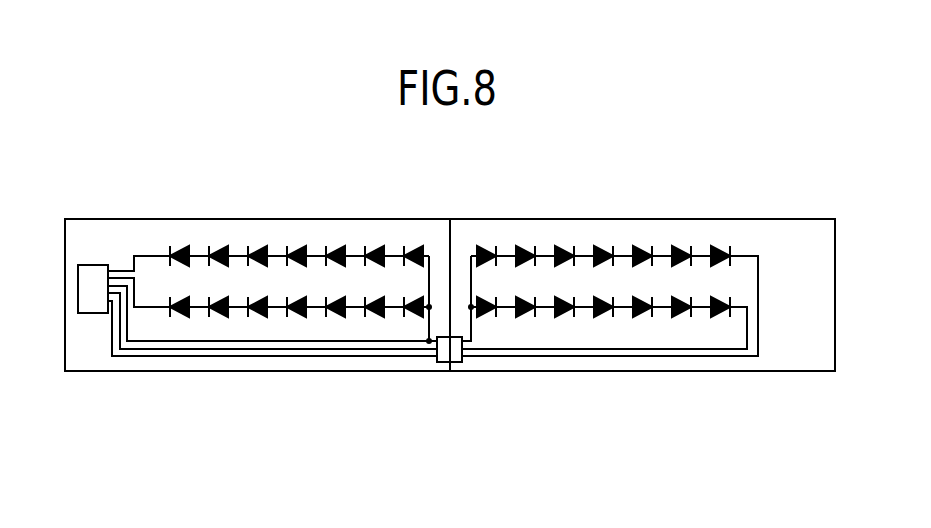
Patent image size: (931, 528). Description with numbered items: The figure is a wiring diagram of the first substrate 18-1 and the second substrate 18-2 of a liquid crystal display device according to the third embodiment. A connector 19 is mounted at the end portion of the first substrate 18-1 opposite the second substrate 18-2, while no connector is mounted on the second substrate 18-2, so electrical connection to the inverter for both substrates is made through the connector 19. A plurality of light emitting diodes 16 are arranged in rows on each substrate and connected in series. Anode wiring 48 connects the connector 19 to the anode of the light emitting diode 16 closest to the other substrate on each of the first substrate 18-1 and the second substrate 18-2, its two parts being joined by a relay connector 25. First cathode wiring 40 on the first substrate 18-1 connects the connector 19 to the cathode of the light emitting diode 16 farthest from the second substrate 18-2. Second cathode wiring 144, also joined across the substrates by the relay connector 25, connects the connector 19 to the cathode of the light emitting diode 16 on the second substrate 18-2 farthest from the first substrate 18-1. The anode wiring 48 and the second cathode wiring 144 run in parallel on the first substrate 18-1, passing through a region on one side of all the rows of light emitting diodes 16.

The light emitting diode 16 is at (220, 251).
The first substrate 18-1 is at (262, 365).
The second substrate 18-2 is at (600, 363).
The connector 19 is at (96, 289).
The relay connector 25 is at (459, 369).
The first cathode wiring 40 is at (152, 255).
The anode wiring 48 is at (363, 341).
The second cathode wiring 144 is at (750, 255).